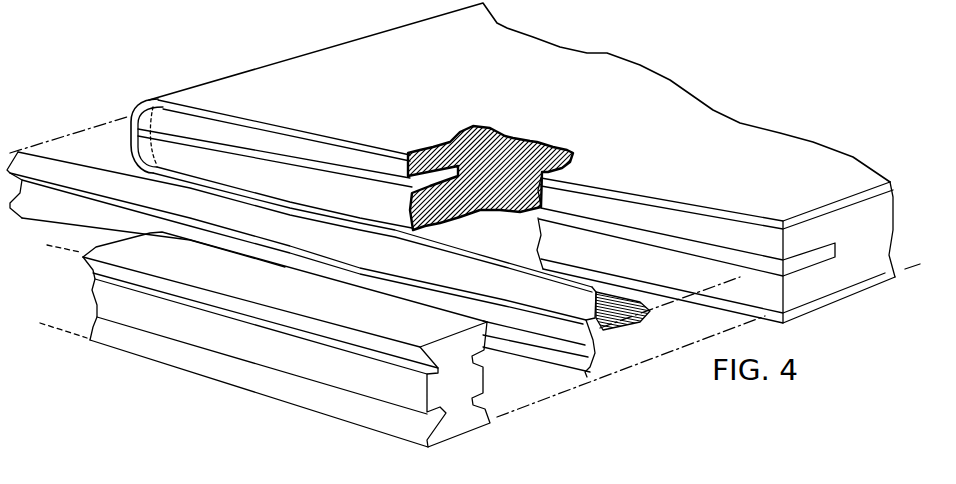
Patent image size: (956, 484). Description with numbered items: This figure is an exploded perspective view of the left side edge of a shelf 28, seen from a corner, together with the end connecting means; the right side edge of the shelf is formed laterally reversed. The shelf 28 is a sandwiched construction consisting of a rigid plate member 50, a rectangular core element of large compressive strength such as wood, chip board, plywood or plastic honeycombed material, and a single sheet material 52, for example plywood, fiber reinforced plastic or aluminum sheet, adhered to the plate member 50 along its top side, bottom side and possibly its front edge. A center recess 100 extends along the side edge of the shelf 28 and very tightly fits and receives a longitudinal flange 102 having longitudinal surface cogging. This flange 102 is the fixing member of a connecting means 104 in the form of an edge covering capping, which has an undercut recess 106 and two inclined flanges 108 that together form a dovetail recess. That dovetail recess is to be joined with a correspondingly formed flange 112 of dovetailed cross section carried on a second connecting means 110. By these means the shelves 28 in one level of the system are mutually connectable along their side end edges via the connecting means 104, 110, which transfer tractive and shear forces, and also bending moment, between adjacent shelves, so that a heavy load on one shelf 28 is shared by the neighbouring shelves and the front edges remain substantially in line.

The shelf 28 is at (343, 68).
The plate member 50 is at (703, 235).
The sheet material 52 is at (680, 207).
The center recess 100 is at (658, 242).
The longitudinal flange 102 is at (632, 323).
The connecting means 104 is at (595, 363).
The undercut recess 106 is at (560, 327).
The inclined flanges 108 is at (527, 312).
The connecting means 110 is at (328, 362).
The flange 112 is at (182, 328).